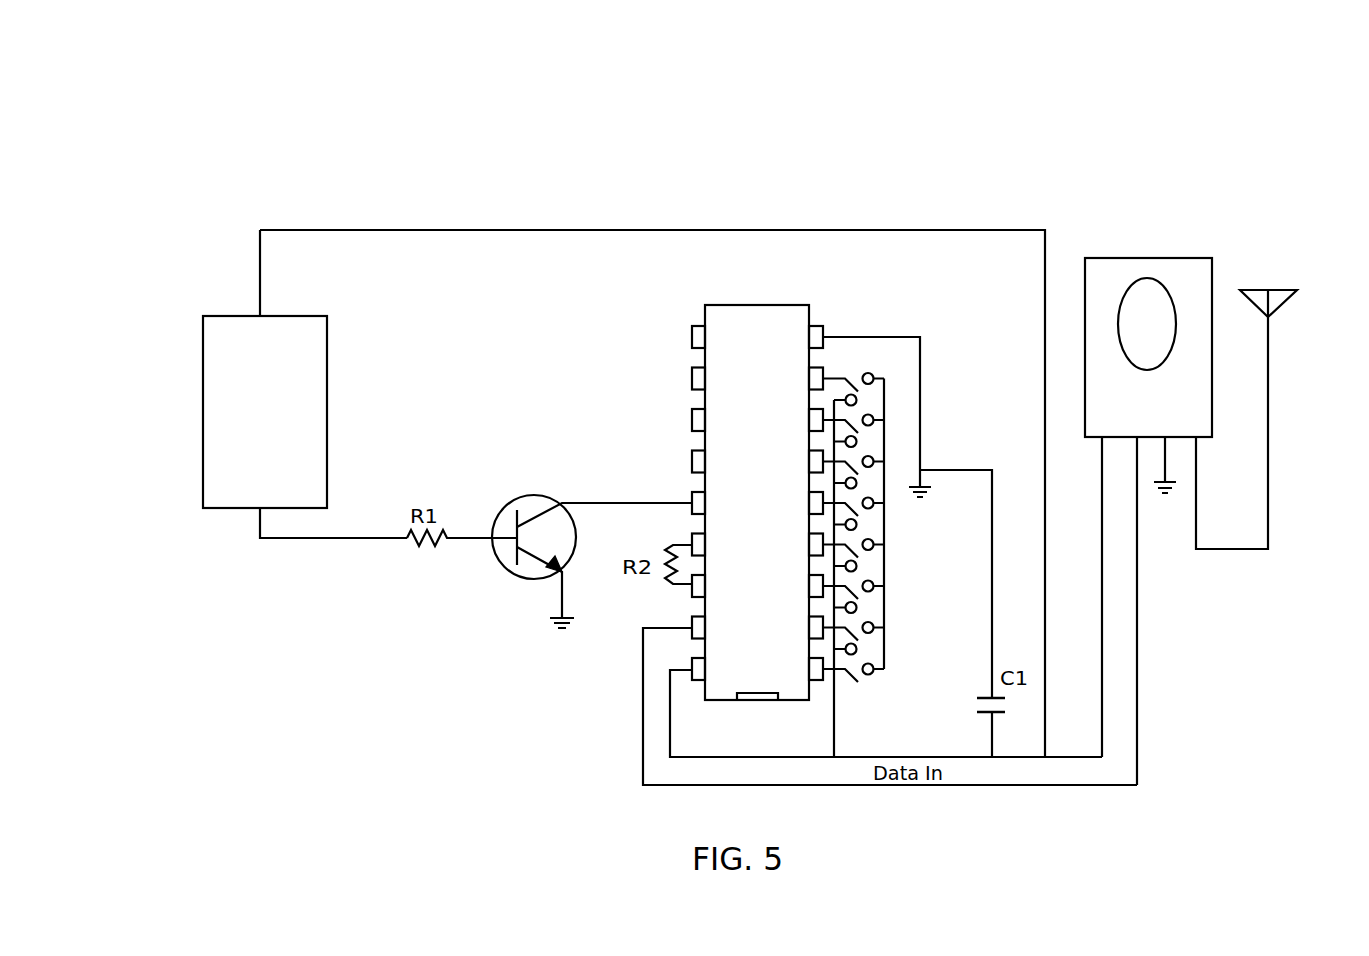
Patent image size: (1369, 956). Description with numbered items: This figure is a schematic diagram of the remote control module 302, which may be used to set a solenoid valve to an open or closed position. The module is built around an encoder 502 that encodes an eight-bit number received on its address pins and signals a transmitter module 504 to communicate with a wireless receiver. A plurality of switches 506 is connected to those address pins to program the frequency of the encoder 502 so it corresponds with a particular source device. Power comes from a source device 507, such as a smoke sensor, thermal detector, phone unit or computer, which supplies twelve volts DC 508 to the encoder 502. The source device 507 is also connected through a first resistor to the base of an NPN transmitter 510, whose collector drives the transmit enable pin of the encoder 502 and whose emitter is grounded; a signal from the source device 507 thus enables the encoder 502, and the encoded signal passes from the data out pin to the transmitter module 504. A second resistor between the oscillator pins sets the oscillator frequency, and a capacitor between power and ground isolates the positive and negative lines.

The remote control module 302 is at (938, 155).
The encoder 502 is at (717, 323).
The transmitter module 504 is at (1192, 269).
The plurality of switches 506 is at (888, 568).
The source device 507 is at (205, 405).
The 12VDC 508 is at (425, 263).
The NPN transmitter 510 is at (523, 493).